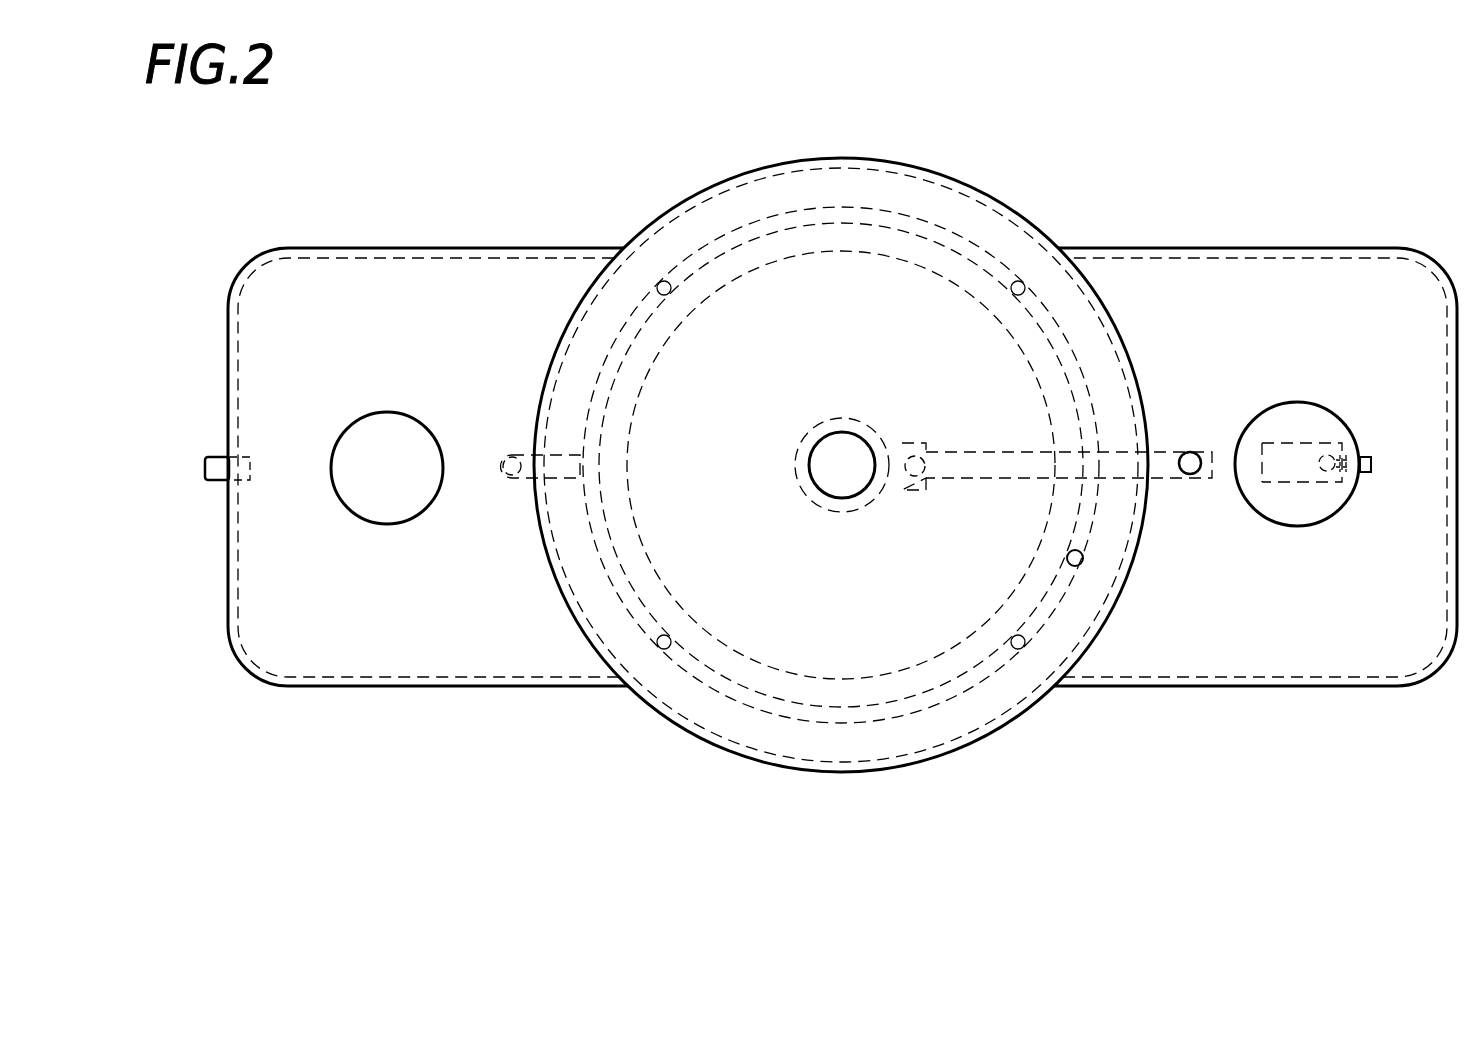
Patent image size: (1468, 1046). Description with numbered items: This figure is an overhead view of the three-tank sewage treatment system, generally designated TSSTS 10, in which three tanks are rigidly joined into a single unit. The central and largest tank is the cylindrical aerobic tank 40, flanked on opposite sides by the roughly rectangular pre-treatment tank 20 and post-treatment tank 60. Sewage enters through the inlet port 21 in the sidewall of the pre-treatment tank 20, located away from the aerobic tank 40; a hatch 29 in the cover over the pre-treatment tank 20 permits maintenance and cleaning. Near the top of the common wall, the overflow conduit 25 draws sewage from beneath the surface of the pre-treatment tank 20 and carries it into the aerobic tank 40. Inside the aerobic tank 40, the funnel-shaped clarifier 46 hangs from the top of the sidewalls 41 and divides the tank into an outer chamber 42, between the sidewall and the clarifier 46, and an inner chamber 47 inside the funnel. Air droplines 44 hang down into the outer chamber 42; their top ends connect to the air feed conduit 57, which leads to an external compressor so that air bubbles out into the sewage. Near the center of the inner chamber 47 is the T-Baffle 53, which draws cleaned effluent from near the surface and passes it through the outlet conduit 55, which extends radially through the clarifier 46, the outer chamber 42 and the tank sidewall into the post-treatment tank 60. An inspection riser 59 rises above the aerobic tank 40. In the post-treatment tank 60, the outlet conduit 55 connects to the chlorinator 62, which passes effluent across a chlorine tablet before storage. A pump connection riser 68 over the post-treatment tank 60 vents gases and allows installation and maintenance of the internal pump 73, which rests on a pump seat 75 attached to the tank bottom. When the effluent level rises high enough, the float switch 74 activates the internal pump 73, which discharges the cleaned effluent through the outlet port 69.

The TSSTS 10 is at (839, 876).
The pre-treatment tank 20 is at (842, 467).
The inlet port 21 is at (222, 458).
The overflow conduit 25 is at (512, 457).
The hatch 29 is at (386, 428).
The aerobic tank 40 is at (841, 465).
The sidewalls 41 is at (883, 781).
The outer chamber 42 is at (715, 672).
The air droplines 44 is at (660, 280).
The clarifier 46 is at (905, 668).
The inner chamber 47 is at (748, 316).
The T-Baffle 53 is at (918, 443).
The outlet conduit 55 is at (1042, 462).
The air feed conduit 57 is at (1055, 597).
The inspection riser 59 is at (823, 447).
The post-treatment tank 60 is at (1299, 621).
The chlorinator 62 is at (1190, 452).
The pump connection riser 68 is at (1320, 412).
The outlet port 69 is at (1366, 462).
The internal pump 73 is at (1308, 482).
The float switch 74 is at (1362, 487).
The pump seat 75 is at (1262, 465).